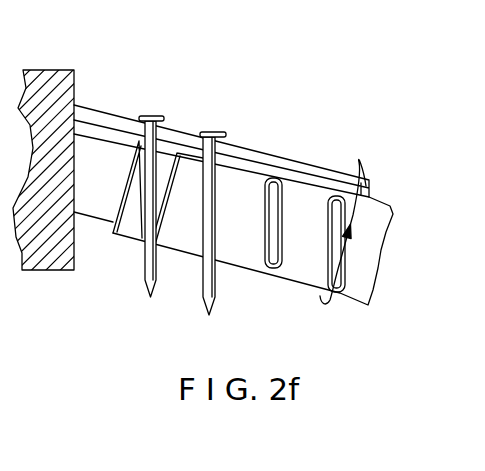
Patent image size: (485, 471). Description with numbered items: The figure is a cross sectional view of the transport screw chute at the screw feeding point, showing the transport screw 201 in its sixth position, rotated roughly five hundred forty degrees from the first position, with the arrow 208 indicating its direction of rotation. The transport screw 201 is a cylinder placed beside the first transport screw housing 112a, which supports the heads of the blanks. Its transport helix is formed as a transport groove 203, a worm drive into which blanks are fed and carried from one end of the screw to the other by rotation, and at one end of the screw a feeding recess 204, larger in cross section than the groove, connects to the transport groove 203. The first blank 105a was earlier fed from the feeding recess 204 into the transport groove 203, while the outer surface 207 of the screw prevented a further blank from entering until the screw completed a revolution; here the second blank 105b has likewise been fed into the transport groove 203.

The first transport screw housing 112a is at (37, 70).
The first blank 105a is at (216, 131).
The second blank 105b is at (152, 115).
The feeding recess 204 is at (163, 168).
The outer surface 207 is at (132, 203).
The transport groove 203 is at (275, 268).
The transport screw 201 is at (373, 308).
The arrow 208 is at (360, 161).